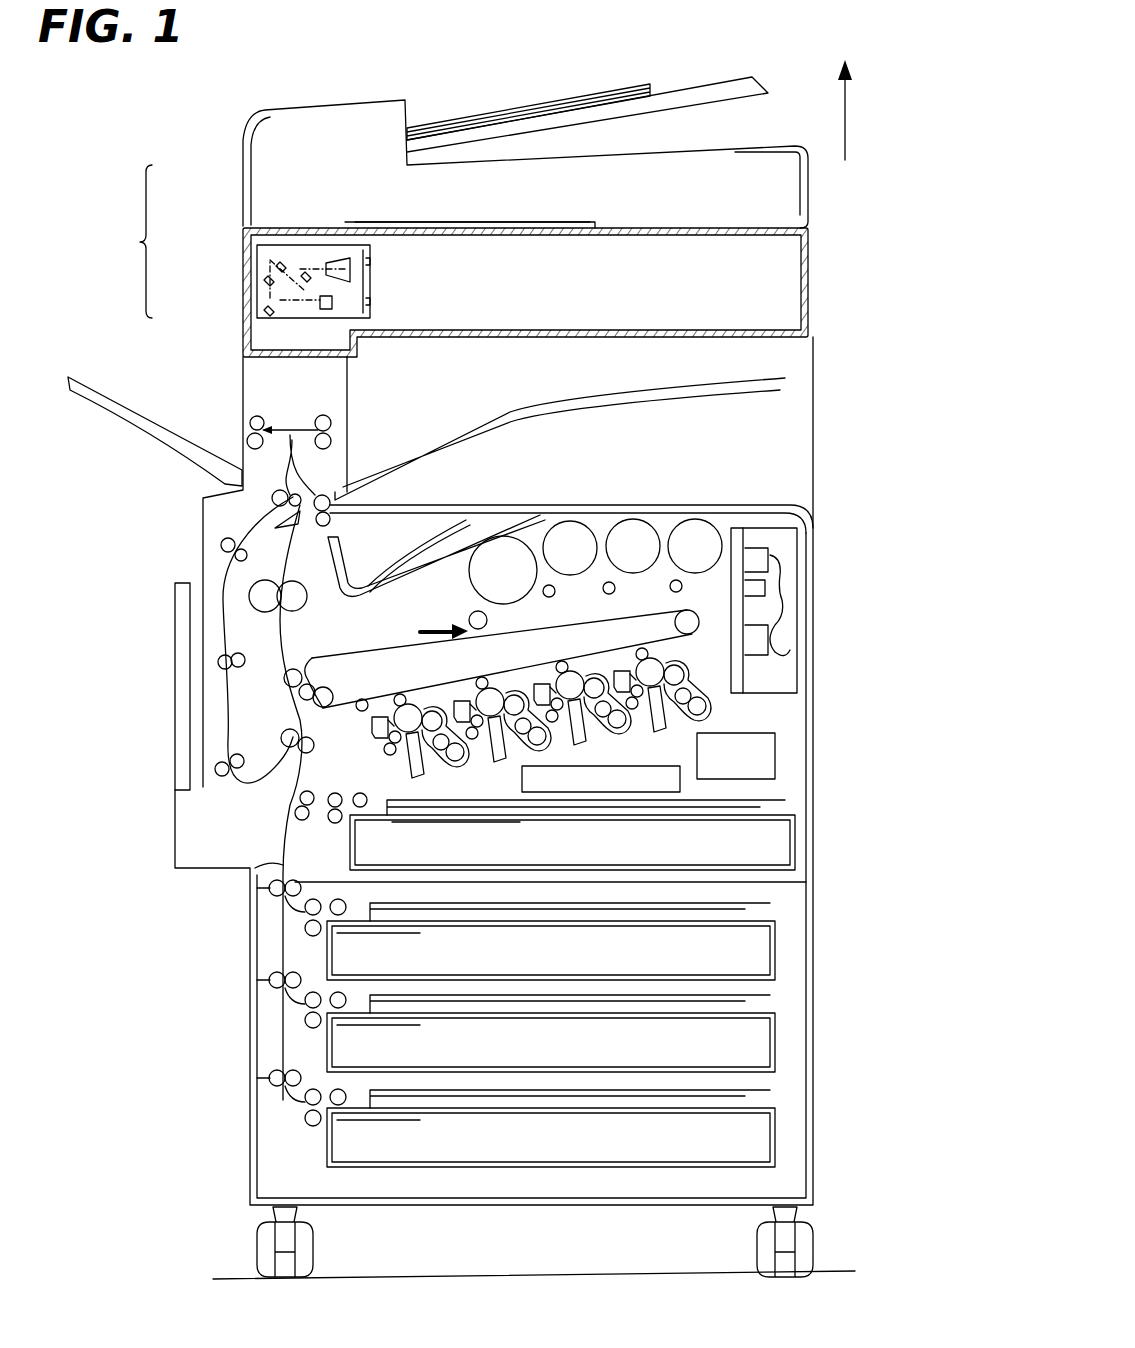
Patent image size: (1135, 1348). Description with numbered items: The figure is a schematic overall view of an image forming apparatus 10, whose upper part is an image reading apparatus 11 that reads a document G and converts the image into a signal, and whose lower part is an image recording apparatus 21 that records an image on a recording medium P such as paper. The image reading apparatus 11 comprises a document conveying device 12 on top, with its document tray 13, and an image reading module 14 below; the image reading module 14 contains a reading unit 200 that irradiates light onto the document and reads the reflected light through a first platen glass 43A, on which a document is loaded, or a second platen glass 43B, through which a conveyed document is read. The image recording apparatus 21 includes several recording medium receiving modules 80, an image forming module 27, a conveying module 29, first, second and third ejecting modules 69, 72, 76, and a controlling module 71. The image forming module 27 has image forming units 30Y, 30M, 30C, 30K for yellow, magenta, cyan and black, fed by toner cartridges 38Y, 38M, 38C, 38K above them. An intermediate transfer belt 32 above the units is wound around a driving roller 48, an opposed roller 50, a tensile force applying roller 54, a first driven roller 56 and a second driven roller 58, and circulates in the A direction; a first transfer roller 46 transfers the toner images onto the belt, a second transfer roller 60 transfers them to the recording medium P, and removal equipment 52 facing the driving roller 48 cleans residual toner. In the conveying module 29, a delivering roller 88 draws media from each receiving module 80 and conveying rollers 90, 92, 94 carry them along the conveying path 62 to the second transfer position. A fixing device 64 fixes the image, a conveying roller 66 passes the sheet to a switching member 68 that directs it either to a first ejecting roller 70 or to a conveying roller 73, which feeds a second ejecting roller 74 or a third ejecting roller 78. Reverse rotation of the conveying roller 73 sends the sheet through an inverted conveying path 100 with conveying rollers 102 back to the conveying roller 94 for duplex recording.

The image forming apparatus 10 is at (172, 121).
The image reading apparatus 11 is at (128, 241).
The document conveying device 12 is at (243, 189).
The document tray 13 is at (680, 95).
The image reading module 14 is at (243, 313).
The image recording apparatus 21 is at (243, 392).
The image forming module 27 is at (712, 672).
The conveying module 29 is at (282, 1130).
The image forming unit 30K is at (422, 748).
The image forming unit 30C is at (503, 734).
The image forming unit 30M is at (585, 716).
The image forming unit 30Y is at (675, 705).
The intermediate transfer belt 32 is at (405, 650).
The toner cartridge 38K is at (496, 540).
The toner cartridge 38C is at (568, 525).
The toner cartridge 38M is at (632, 522).
The toner cartridge 38Y is at (695, 522).
The first platen glass 43A is at (490, 222).
The second platen glass 43B is at (306, 262).
The first transfer roller 46 is at (405, 694).
The driving roller 48 is at (683, 603).
The opposed roller 50 is at (332, 668).
The removal equipment 52 is at (745, 652).
The tensile force applying roller 54 is at (333, 690).
The first driven roller 56 is at (366, 699).
The second driven roller 58 is at (676, 628).
The second transfer roller 60 is at (285, 688).
The conveying path 62 is at (298, 650).
The fixing device 64 is at (249, 597).
The conveying roller 66 is at (338, 540).
The switching member 68 is at (275, 522).
The first ejecting module 69 is at (428, 532).
The first ejecting roller 70 is at (330, 492).
The controlling module 71 is at (775, 758).
The second ejecting module 72 is at (595, 398).
The conveying roller 73 is at (248, 495).
The second ejecting roller 74 is at (332, 420).
The third ejecting module 76 is at (122, 410).
The third ejecting roller 78 is at (246, 425).
The recording medium receiving module 80 is at (798, 840).
The delivering roller 88 is at (360, 792).
The conveying roller 90 is at (336, 825).
The conveying roller 92 is at (308, 796).
The conveying roller 94 is at (282, 738).
The inverted conveying path 100 is at (185, 722).
The conveying rollers 102 is at (222, 548).
The reading unit 200 is at (374, 277).
The A direction A is at (444, 626).
The document G is at (545, 100).
The recording medium P is at (790, 795).